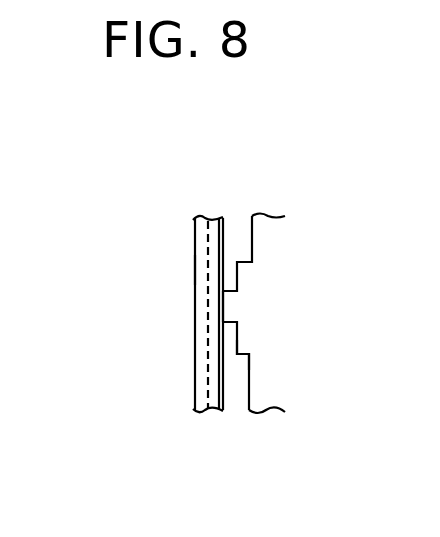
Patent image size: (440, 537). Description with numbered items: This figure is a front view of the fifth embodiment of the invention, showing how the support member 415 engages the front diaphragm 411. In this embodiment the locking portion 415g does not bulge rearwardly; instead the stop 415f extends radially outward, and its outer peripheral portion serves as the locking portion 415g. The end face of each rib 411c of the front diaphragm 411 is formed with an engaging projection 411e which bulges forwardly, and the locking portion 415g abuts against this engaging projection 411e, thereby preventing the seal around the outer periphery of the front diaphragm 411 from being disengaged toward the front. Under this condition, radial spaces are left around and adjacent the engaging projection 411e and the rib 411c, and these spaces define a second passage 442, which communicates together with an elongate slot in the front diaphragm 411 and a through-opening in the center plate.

The support member 415 is at (193, 387).
The locking portion 415g is at (197, 268).
The stop 415f is at (214, 340).
The front diaphragm 411 is at (265, 392).
The rib 411c is at (241, 348).
The engaging projection 411e is at (228, 298).
The second passage 442 is at (242, 232).